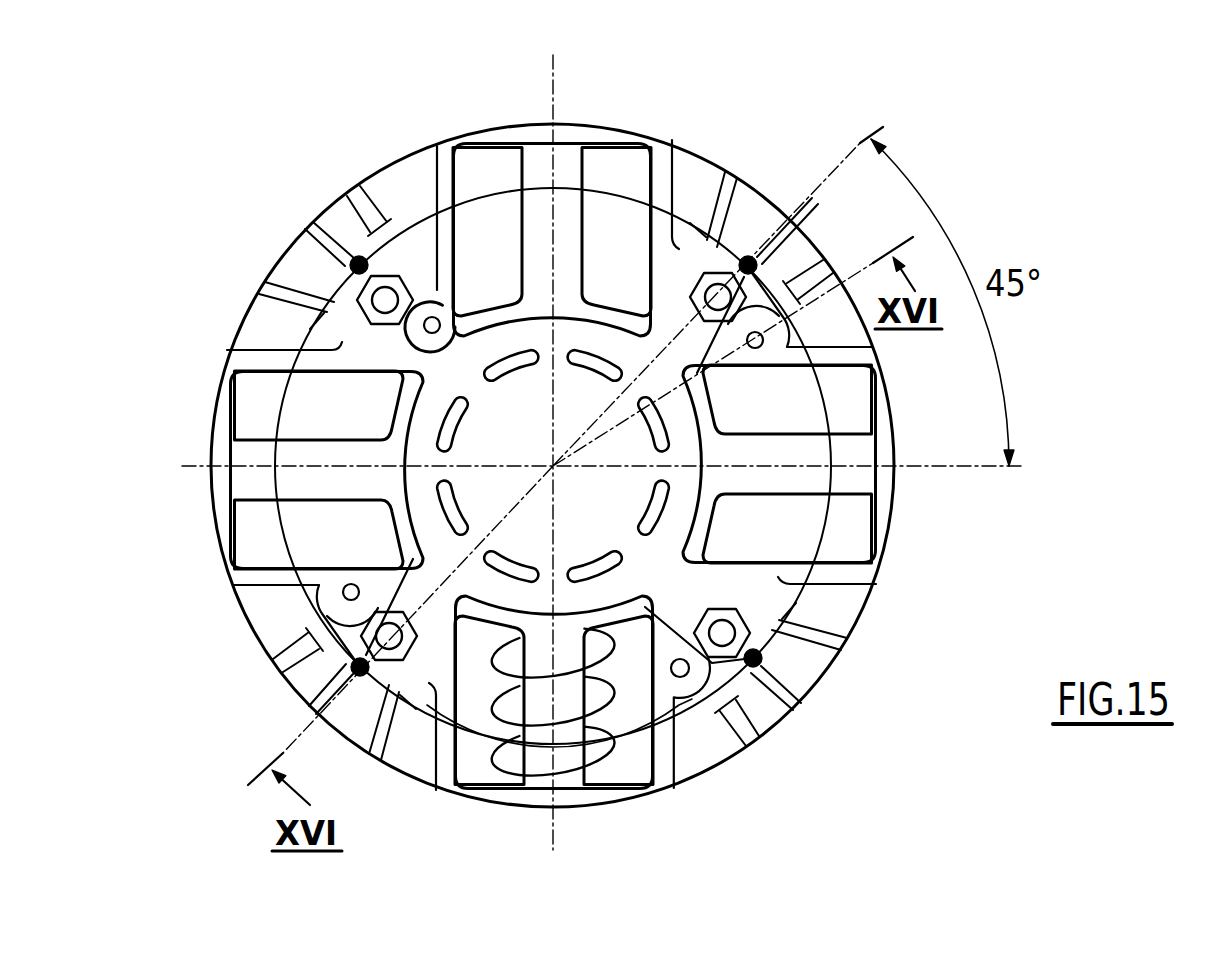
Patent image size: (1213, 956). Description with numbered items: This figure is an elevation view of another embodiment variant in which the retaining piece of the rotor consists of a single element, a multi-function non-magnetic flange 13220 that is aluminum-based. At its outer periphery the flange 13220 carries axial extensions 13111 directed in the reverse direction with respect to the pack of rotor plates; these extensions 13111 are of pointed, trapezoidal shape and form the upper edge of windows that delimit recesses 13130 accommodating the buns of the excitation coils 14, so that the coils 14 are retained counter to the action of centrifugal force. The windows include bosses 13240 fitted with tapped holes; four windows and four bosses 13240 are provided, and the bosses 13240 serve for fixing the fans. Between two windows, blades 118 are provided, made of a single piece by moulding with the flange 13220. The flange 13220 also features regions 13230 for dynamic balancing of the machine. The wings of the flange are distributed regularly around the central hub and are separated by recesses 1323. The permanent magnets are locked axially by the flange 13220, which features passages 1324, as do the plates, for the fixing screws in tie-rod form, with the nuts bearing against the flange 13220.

The excitation coil 14 is at (495, 758).
The blades 118 is at (716, 198).
The recesses 1323 is at (350, 668).
The passages 1324 is at (380, 303).
The axial extensions 13111 is at (620, 792).
The recesses 13130 is at (243, 532).
The non-magnetic flange 13220 is at (412, 125).
The regions for dynamic balancing 13230 is at (750, 254).
The bosses 13240 is at (315, 615).